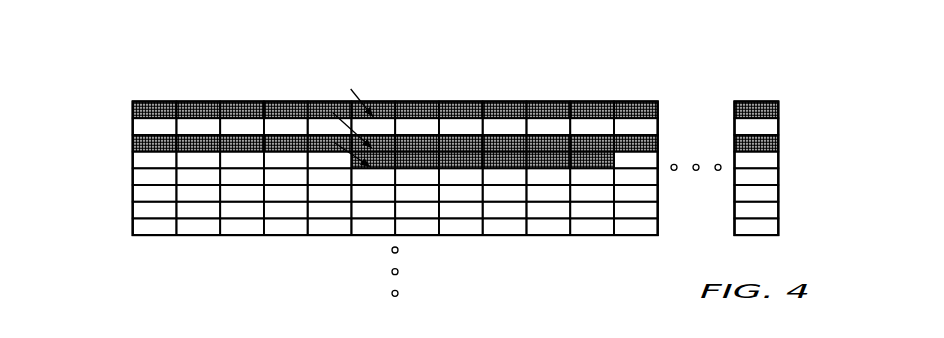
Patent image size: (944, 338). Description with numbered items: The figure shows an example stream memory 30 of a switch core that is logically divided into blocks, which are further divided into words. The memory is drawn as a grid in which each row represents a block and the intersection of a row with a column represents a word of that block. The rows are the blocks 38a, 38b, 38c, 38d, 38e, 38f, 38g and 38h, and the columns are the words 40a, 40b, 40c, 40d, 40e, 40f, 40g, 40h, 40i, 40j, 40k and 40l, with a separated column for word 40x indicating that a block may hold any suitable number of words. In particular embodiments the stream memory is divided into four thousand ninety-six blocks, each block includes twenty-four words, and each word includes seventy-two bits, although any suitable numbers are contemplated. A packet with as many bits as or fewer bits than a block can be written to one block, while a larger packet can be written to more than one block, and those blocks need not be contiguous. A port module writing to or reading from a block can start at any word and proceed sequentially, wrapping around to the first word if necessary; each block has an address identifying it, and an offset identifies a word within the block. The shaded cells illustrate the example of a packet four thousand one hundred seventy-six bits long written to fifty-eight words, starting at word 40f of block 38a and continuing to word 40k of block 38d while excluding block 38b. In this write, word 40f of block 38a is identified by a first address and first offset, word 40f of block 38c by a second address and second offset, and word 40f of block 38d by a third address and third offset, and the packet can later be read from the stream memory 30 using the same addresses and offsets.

The stream memory 30 is at (145, 250).
The block 38a is at (127, 110).
The block 38b is at (783, 125).
The block 38c is at (127, 144).
The block 38d is at (783, 158).
The block 38e is at (127, 178).
The block 38f is at (783, 193).
The block 38g is at (127, 210).
The block 38h is at (783, 227).
The word 40a is at (155, 97).
The word 40b is at (198, 240).
The word 40c is at (242, 97).
The word 40d is at (286, 240).
The word 40e is at (330, 97).
The word 40f is at (371, 242).
The word 40g is at (417, 97).
The word 40h is at (461, 242).
The word 40i is at (505, 97).
The word 40j is at (548, 242).
The word 40k is at (592, 97).
The word 40l is at (636, 242).
The word 40x is at (756, 97).